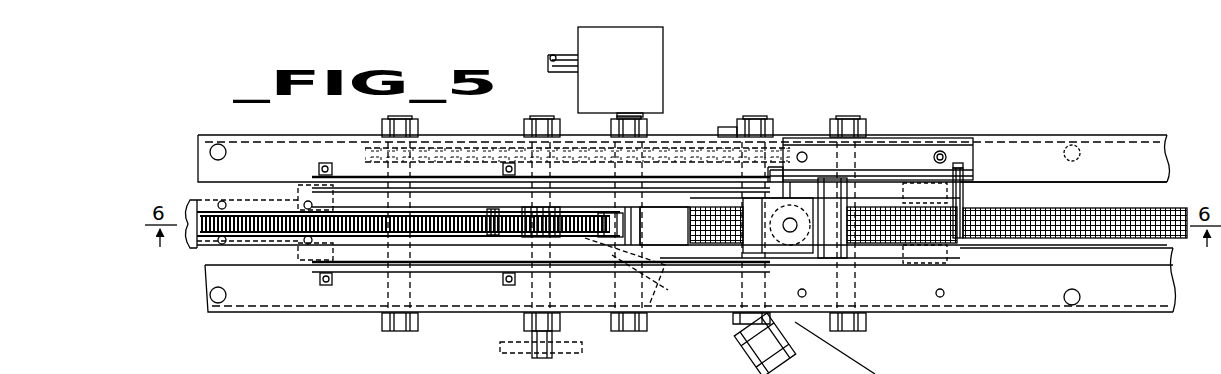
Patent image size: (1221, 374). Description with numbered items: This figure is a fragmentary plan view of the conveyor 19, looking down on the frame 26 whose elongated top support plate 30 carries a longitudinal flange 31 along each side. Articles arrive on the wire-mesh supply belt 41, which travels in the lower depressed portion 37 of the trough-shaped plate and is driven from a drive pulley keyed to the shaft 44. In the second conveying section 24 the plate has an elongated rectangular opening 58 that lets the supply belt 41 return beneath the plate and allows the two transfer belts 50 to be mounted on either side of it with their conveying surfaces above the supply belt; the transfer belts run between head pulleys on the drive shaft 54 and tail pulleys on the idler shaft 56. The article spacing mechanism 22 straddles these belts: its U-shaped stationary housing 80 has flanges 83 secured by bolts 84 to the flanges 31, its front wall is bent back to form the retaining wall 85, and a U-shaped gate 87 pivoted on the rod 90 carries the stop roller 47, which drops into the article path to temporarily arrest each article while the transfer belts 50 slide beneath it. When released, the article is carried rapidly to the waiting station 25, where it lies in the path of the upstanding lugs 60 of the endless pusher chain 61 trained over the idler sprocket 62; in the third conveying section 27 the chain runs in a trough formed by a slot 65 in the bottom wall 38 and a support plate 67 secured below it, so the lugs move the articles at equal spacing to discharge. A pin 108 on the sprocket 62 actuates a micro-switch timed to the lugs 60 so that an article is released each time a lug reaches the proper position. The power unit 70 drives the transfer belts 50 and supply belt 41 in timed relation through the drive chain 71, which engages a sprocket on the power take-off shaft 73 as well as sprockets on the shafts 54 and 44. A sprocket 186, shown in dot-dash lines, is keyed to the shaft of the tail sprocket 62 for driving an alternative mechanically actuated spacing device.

The conveyor 19 is at (232, 137).
The article spacing mechanism 22 is at (896, 170).
The second conveying section 24 is at (672, 193).
The waiting station 25 is at (266, 193).
The frame 26 is at (258, 298).
The third conveying section 27 is at (197, 190).
The top support plate 30 is at (1140, 140).
The longitudinal flange 31 is at (1108, 160).
The lower depressed portion 37 is at (285, 192).
The bottom wall 38 is at (238, 201).
The supply belt 41 is at (1112, 222).
The shaft 44 is at (750, 120).
The stop roller 47 is at (745, 190).
The transfer belts 50 is at (580, 197).
The drive shaft 54 is at (400, 333).
The idler shaft 56 is at (830, 160).
The rectangular opening 58 is at (335, 255).
The upstanding lugs 60 is at (632, 213).
The pusher chain 61 is at (463, 215).
The idler sprocket 62 is at (532, 213).
The slot 65 is at (258, 240).
The support plate 67 is at (196, 250).
The power unit 70 is at (652, 47).
The drive chain 71 is at (497, 140).
The power take-off shaft 73 is at (630, 333).
The stationary housing 80 is at (872, 178).
The flanges 83 is at (962, 140).
The bolts 84 is at (803, 152).
The lower portion of front wall 85 is at (841, 214).
The gate 87 is at (832, 173).
The rod 90 is at (952, 236).
The pin 108 is at (496, 240).
The sprocket 186 is at (520, 348).